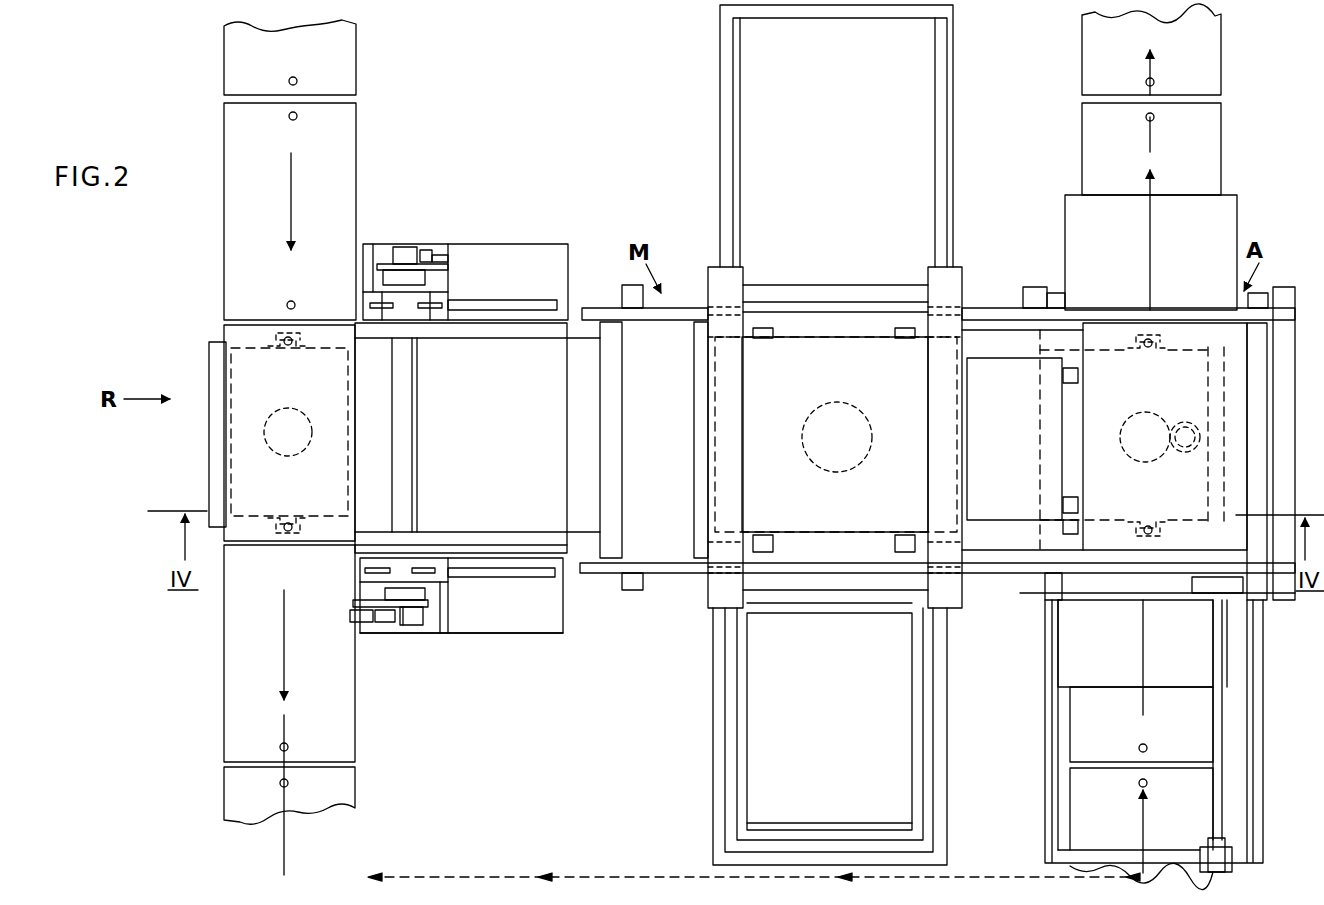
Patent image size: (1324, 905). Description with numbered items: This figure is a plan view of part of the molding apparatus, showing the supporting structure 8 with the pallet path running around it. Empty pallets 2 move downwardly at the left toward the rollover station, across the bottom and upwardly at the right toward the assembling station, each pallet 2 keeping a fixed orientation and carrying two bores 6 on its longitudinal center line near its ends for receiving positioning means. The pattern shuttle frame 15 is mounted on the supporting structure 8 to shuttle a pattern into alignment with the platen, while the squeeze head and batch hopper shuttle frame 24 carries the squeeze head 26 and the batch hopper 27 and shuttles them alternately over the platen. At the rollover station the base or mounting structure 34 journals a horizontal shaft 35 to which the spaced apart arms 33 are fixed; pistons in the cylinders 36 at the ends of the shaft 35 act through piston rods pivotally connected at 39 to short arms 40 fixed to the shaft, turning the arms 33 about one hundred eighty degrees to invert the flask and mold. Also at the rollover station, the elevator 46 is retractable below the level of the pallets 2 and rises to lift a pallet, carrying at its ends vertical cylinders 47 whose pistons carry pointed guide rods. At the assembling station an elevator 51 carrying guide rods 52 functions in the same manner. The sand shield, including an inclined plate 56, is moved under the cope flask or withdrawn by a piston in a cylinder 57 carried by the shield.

The pallet 2 is at (340, 132).
The bore 6 is at (297, 112).
The supporting structure 8 is at (715, 460).
The pattern shuttle frame 15 is at (713, 745).
The squeeze head and batch hopper shuttle frame 24 is at (985, 555).
The squeeze head 26 is at (826, 336).
The batch hopper 27 is at (990, 362).
The spaced apart arms 33 is at (567, 325).
The base or mounting structure 34 is at (532, 575).
The horizontal shaft 35 is at (407, 452).
The cylinder 36 is at (412, 627).
The pivotal connection 39 is at (362, 630).
The short arm 40 is at (428, 604).
The elevator 46 is at (206, 430).
The vertical cylinder 47 is at (297, 347).
The elevator 51 is at (1200, 405).
The guide rod 52 is at (1164, 346).
The inclined plate 56 is at (1144, 504).
The cylinder 57 is at (1250, 606).